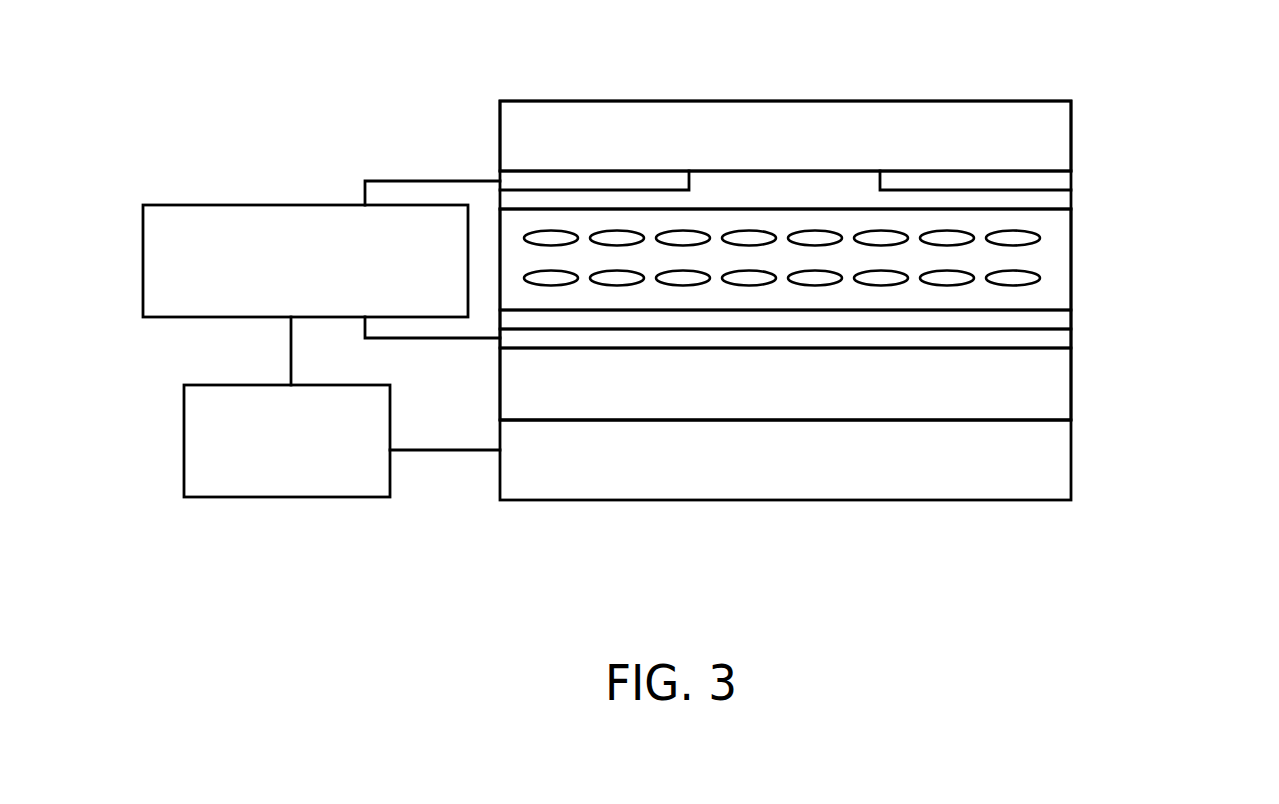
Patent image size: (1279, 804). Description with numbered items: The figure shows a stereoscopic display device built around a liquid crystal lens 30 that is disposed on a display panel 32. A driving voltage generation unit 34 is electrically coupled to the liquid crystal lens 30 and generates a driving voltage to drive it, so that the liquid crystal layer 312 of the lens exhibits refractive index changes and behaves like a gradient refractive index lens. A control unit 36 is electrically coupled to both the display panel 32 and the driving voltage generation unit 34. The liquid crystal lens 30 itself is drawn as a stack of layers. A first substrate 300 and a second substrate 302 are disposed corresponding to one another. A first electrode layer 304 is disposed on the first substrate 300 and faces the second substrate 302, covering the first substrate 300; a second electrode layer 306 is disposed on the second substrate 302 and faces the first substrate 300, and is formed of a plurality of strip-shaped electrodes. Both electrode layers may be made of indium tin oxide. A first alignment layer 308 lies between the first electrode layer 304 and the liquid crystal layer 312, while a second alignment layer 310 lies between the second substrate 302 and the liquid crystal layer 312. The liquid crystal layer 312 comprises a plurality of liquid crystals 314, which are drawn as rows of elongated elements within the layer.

The liquid crystal lens 30 is at (1188, 125).
The display panel 32 is at (1042, 473).
The driving voltage generation unit 34 is at (282, 205).
The control unit 36 is at (298, 497).
The first substrate 300 is at (1045, 395).
The second substrate 302 is at (1041, 137).
The first electrode layer 304 is at (1040, 343).
The second electrode layer 306 is at (1042, 181).
The first alignment layer 308 is at (1040, 322).
The second alignment layer 310 is at (1042, 200).
The liquid crystal layer 312 is at (1047, 260).
The liquid crystals 314 is at (558, 239).